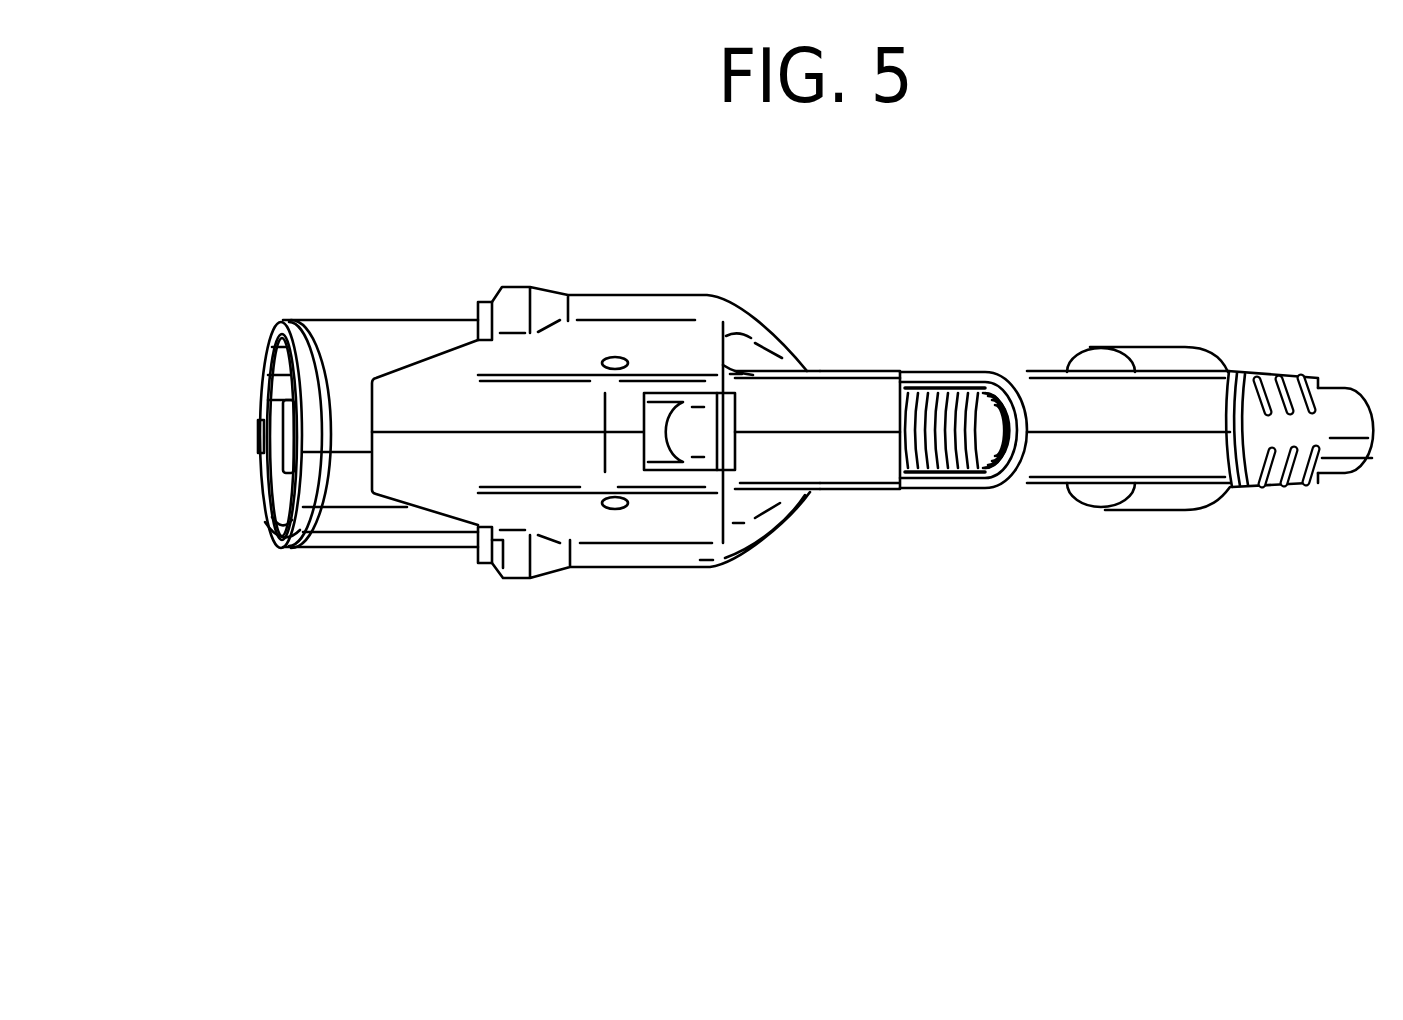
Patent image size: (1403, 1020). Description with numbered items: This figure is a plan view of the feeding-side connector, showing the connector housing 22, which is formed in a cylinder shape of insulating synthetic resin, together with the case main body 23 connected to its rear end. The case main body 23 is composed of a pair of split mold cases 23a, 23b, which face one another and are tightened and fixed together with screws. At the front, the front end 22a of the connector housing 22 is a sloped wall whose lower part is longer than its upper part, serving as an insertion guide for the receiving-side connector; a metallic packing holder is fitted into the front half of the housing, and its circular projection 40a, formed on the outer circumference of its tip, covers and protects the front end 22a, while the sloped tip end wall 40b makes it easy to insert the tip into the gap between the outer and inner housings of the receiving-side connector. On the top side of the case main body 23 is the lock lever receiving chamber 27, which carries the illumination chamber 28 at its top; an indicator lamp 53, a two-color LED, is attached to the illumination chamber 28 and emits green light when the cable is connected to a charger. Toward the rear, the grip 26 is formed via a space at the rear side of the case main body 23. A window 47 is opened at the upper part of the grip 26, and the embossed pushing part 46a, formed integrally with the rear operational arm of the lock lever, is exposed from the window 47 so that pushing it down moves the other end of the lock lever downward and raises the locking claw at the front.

The connector housing 22 is at (375, 548).
The front end 22a is at (308, 530).
The case main body 23 is at (796, 538).
The split mold case 23a is at (792, 412).
The split mold case 23b is at (866, 490).
The grip 26 is at (1100, 467).
The lock lever receiving chamber 27 is at (638, 333).
The illumination chamber 28 is at (738, 410).
The circular projection 40a is at (305, 330).
The tip end wall 40b is at (277, 328).
The pushing part 46a is at (947, 390).
The window 47 is at (993, 486).
The indicator lamp 53 is at (661, 393).